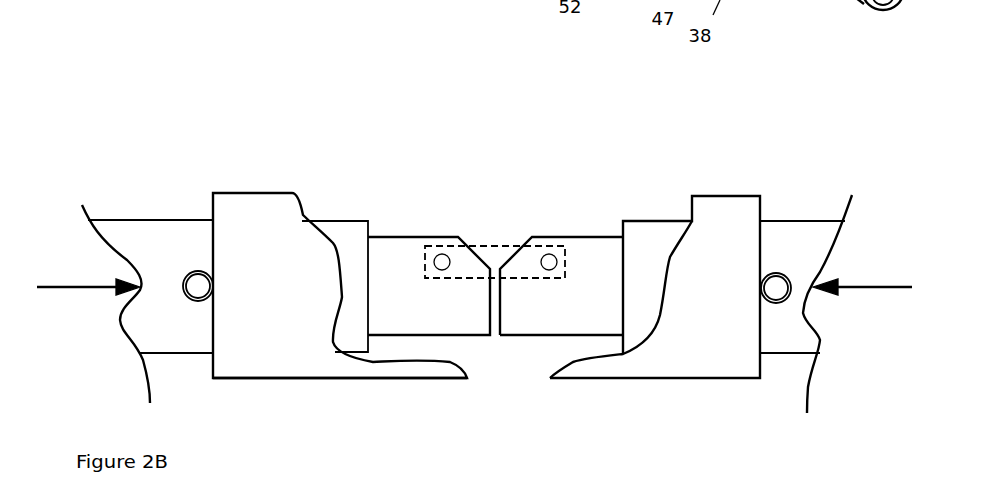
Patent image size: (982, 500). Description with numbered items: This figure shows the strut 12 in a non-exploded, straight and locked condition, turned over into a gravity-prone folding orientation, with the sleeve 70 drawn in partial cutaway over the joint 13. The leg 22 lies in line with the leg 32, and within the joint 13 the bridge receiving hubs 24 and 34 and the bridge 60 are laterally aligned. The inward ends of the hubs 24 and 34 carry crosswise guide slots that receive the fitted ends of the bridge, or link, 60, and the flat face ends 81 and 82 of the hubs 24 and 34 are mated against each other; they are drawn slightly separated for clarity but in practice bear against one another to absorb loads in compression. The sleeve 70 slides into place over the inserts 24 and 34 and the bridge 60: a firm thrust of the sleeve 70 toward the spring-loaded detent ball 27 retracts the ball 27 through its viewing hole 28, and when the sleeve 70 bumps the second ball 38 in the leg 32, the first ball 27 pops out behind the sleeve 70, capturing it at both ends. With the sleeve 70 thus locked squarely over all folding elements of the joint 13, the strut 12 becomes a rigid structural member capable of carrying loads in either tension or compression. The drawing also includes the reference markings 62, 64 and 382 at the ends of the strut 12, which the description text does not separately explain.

The strut 12 is at (245, 158).
The joint 13 is at (481, 215).
The leg 22 is at (345, 233).
The bridge receiving hub 24 is at (405, 250).
The detent ball 27 is at (199, 283).
The viewing hole 28 is at (188, 272).
The leg 32 is at (653, 238).
The bridge receiving hub 34 is at (580, 247).
The second ball 38 is at (780, 275).
The bridge 60 is at (492, 246).
The first force direction 62 is at (50, 290).
The second force direction 64 is at (852, 290).
The sleeve 70 is at (353, 368).
The flat face end 81 is at (493, 333).
The flat face end 82 is at (499, 317).
The fastener 382 is at (773, 272).